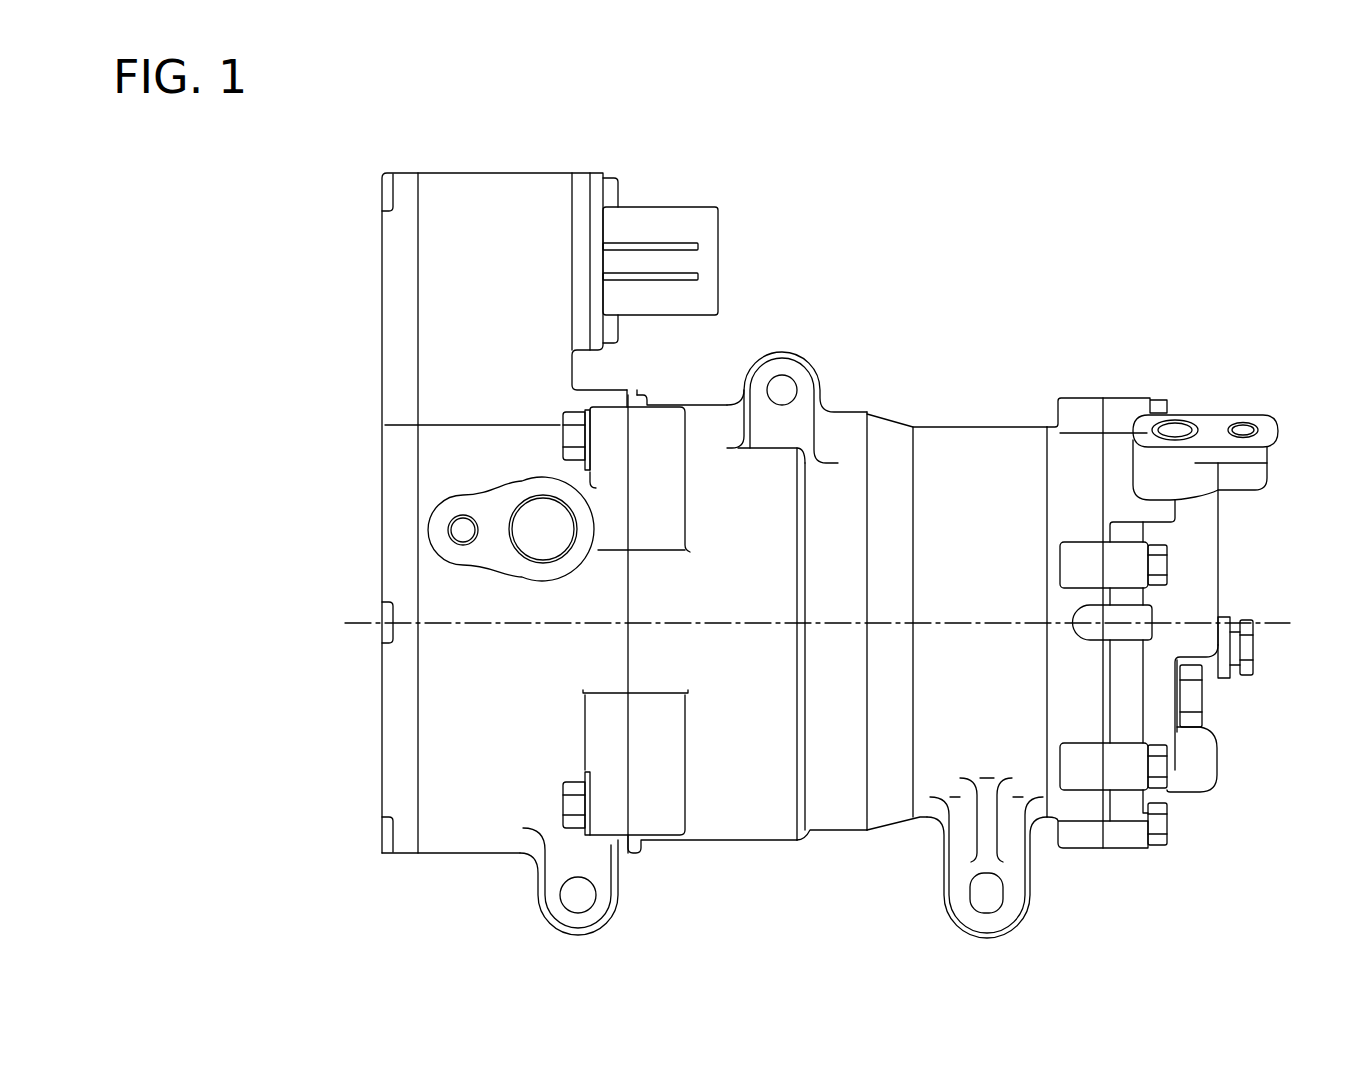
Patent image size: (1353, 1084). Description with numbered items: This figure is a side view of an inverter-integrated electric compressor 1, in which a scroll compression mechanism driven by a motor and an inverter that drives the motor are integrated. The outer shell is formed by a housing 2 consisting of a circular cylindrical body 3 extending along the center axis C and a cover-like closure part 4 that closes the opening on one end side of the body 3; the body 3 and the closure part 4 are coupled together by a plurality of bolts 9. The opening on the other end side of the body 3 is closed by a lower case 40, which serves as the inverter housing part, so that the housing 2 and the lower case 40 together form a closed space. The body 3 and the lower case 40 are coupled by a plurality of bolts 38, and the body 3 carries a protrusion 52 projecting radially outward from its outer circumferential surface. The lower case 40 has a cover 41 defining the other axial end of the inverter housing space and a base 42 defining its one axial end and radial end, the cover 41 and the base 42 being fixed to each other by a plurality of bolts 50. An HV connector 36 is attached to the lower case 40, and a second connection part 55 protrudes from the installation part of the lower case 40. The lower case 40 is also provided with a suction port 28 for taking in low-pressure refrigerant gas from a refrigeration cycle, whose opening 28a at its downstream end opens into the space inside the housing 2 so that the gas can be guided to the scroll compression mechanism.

The electric compressor 1 is at (1149, 206).
The housing 2 is at (958, 364).
The body 3 is at (890, 433).
The closure part 4 is at (1122, 410).
The bolts 9 is at (1158, 565).
The suction port 28 is at (533, 568).
The opening 28a is at (543, 503).
The HV connector 36 is at (683, 214).
The bolts 38 is at (577, 418).
The lower case 40 is at (482, 136).
The cover 41 is at (398, 345).
The base 42 is at (540, 186).
The bolts 50 is at (382, 190).
The protrusion 52 is at (639, 397).
The second connection part 55 is at (618, 396).
The center axis C is at (1278, 623).